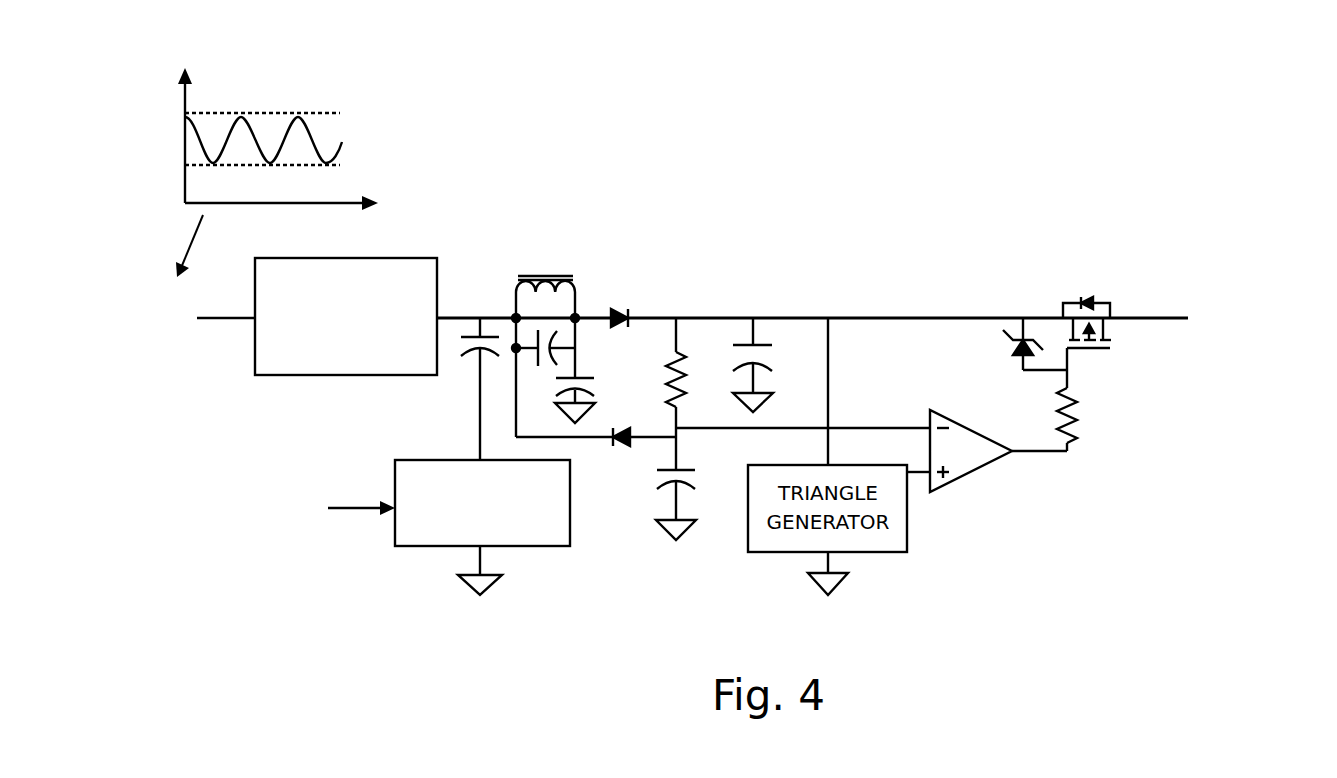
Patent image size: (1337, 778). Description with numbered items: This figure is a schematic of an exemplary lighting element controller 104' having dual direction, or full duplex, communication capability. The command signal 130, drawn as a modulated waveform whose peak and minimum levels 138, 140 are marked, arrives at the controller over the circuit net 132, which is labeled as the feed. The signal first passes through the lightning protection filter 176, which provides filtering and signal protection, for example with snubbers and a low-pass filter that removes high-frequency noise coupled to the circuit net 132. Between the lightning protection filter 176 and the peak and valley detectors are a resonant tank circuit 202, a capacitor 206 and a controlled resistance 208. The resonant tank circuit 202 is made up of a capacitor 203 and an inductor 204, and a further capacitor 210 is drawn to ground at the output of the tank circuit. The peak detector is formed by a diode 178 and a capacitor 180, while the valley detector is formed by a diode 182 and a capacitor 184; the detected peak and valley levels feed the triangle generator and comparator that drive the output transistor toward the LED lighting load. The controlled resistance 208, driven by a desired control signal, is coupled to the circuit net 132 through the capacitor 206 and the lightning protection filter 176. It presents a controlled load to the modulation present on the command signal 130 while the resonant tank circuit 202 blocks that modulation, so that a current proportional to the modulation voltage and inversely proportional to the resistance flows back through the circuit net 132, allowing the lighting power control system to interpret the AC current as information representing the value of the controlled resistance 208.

The command signal 130 is at (272, 72).
The peak voltage level 138 is at (323, 112).
The valley (minimum) voltage level 140 is at (311, 165).
The circuit net 132 is at (226, 318).
The lightning protection filter 176 is at (440, 275).
The lighting element controller 104' is at (872, 200).
The capacitor 206 is at (470, 354).
The controlled resistance 208 is at (412, 546).
The inductor 204 is at (516, 290).
The resonant tank circuit 202 is at (558, 270).
The capacitor 203 is at (552, 335).
The capacitor 210 is at (590, 378).
The diode 178 is at (622, 308).
The diode 182 is at (625, 447).
The capacitor 184 is at (698, 487).
The capacitor 180 is at (760, 345).